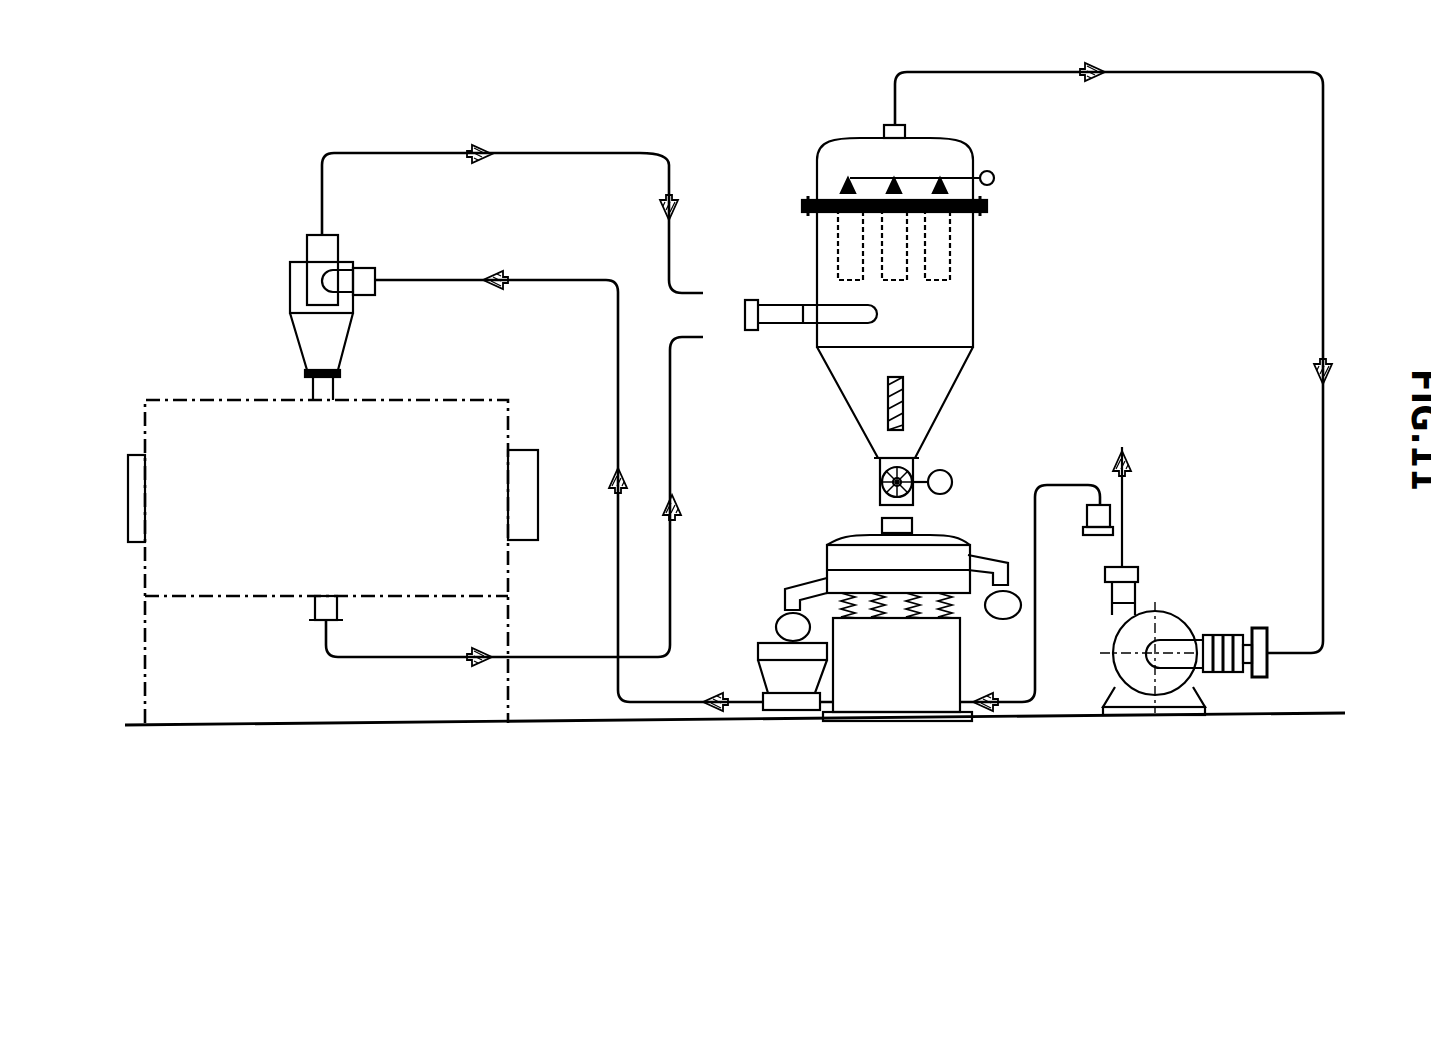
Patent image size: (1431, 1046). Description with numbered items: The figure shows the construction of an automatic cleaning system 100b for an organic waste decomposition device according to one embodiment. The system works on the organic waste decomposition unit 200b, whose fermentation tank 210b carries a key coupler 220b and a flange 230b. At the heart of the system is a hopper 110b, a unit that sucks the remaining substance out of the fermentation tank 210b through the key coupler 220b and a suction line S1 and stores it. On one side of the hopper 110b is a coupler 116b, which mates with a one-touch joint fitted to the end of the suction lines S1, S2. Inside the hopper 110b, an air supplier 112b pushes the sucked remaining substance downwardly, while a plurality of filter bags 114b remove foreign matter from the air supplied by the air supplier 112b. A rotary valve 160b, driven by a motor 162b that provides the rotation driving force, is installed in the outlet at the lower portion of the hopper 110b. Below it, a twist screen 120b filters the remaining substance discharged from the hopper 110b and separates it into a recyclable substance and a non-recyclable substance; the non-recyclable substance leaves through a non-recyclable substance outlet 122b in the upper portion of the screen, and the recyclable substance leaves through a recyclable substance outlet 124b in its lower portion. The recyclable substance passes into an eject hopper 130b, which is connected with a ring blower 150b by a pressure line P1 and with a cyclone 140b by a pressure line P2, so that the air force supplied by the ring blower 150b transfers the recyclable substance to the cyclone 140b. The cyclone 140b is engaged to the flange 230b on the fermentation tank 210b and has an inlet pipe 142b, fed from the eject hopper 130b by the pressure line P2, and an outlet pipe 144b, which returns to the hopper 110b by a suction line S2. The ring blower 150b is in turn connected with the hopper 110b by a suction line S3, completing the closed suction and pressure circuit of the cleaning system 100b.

The automatic cleaning system 100b is at (760, 819).
The hopper 110b is at (944, 150).
The air supplier 112b is at (994, 178).
The filter bags 114b is at (950, 268).
The coupler 116b is at (792, 305).
The twist screen 120b is at (930, 548).
The non-recyclable substance outlet 122b is at (982, 560).
The recyclable substance outlet 124b is at (795, 584).
The eject hopper 130b is at (758, 646).
The cyclone 140b is at (345, 352).
The inlet pipe 142b is at (362, 272).
The outlet pipe 144b is at (307, 245).
The ring blower 150b is at (1180, 616).
The rotary valve 160b is at (880, 482).
The motor 162b is at (946, 471).
The organic waste decomposition unit 200b is at (228, 710).
The fermentation tank 210b is at (432, 400).
The key coupler 220b is at (338, 606).
The flange 230b is at (308, 393).
The suction line S1 is at (672, 446).
The suction line S2 is at (548, 153).
The suction line S3 is at (1323, 270).
The pressure line P1 is at (1036, 658).
The pressure line P2 is at (618, 382).